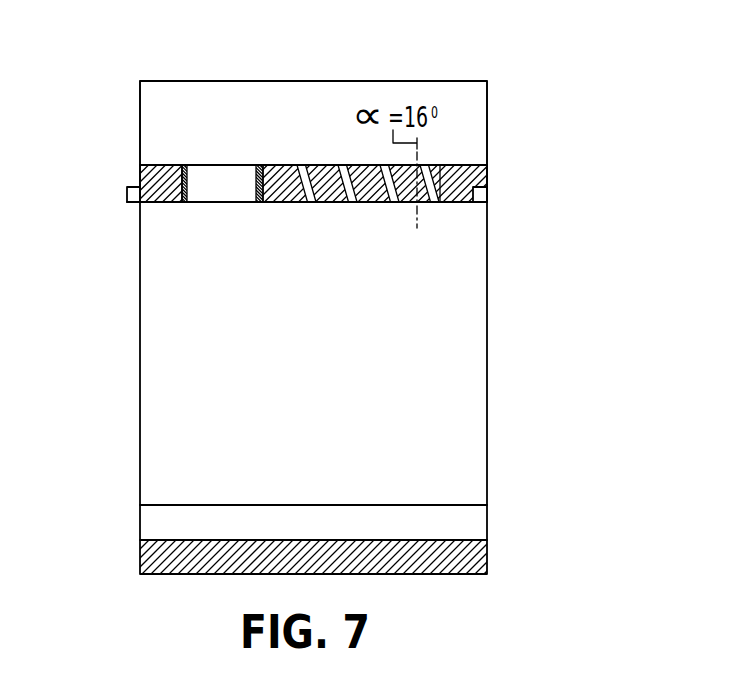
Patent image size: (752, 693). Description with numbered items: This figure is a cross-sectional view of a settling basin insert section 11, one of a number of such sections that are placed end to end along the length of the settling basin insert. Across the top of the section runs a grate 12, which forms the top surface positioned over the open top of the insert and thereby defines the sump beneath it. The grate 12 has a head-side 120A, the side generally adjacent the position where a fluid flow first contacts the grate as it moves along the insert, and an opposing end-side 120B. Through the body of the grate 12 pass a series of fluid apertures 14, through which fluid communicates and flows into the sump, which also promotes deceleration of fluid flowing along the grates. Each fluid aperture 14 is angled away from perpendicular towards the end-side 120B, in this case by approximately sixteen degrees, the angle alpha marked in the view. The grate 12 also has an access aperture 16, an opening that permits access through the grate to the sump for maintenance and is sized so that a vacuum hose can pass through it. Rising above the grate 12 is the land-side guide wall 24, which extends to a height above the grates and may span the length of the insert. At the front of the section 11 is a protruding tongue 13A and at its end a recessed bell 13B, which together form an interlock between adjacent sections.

The settling basin insert section 11 is at (580, 237).
The grate 12 is at (323, 172).
The protruding tongue 13A is at (127, 190).
The recessed bell 13B is at (485, 194).
The fluid apertures 14 is at (302, 172).
The access aperture 16 is at (217, 177).
The land-side guide wall 24 is at (466, 100).
The head-side 120A is at (160, 172).
The end-side 120B is at (470, 173).